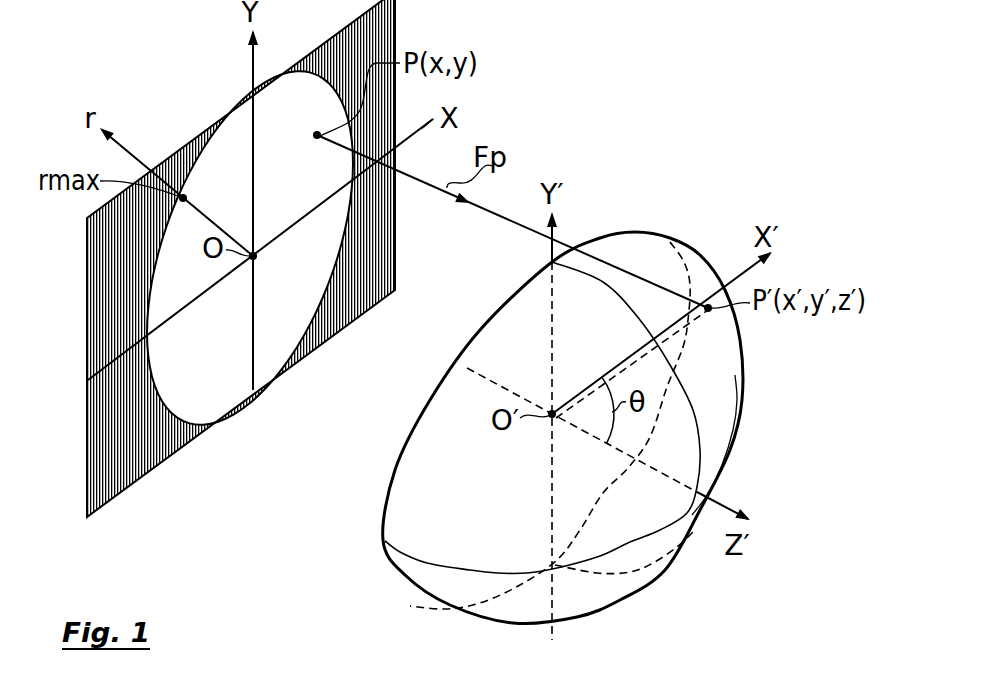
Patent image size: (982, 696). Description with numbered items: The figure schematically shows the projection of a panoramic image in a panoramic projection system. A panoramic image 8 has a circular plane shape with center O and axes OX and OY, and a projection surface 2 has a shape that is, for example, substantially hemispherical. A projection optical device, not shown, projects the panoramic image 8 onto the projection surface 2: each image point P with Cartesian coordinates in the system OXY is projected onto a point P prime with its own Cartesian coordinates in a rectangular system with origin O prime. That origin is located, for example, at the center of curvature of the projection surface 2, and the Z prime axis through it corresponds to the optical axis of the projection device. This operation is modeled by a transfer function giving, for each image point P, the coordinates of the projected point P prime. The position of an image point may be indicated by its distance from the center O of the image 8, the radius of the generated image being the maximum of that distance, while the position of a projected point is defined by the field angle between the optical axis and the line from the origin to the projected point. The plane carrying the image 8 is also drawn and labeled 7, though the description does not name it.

The projection surface 2 is at (655, 252).
The image plane 7 is at (87, 503).
The panoramic image 8 is at (237, 140).